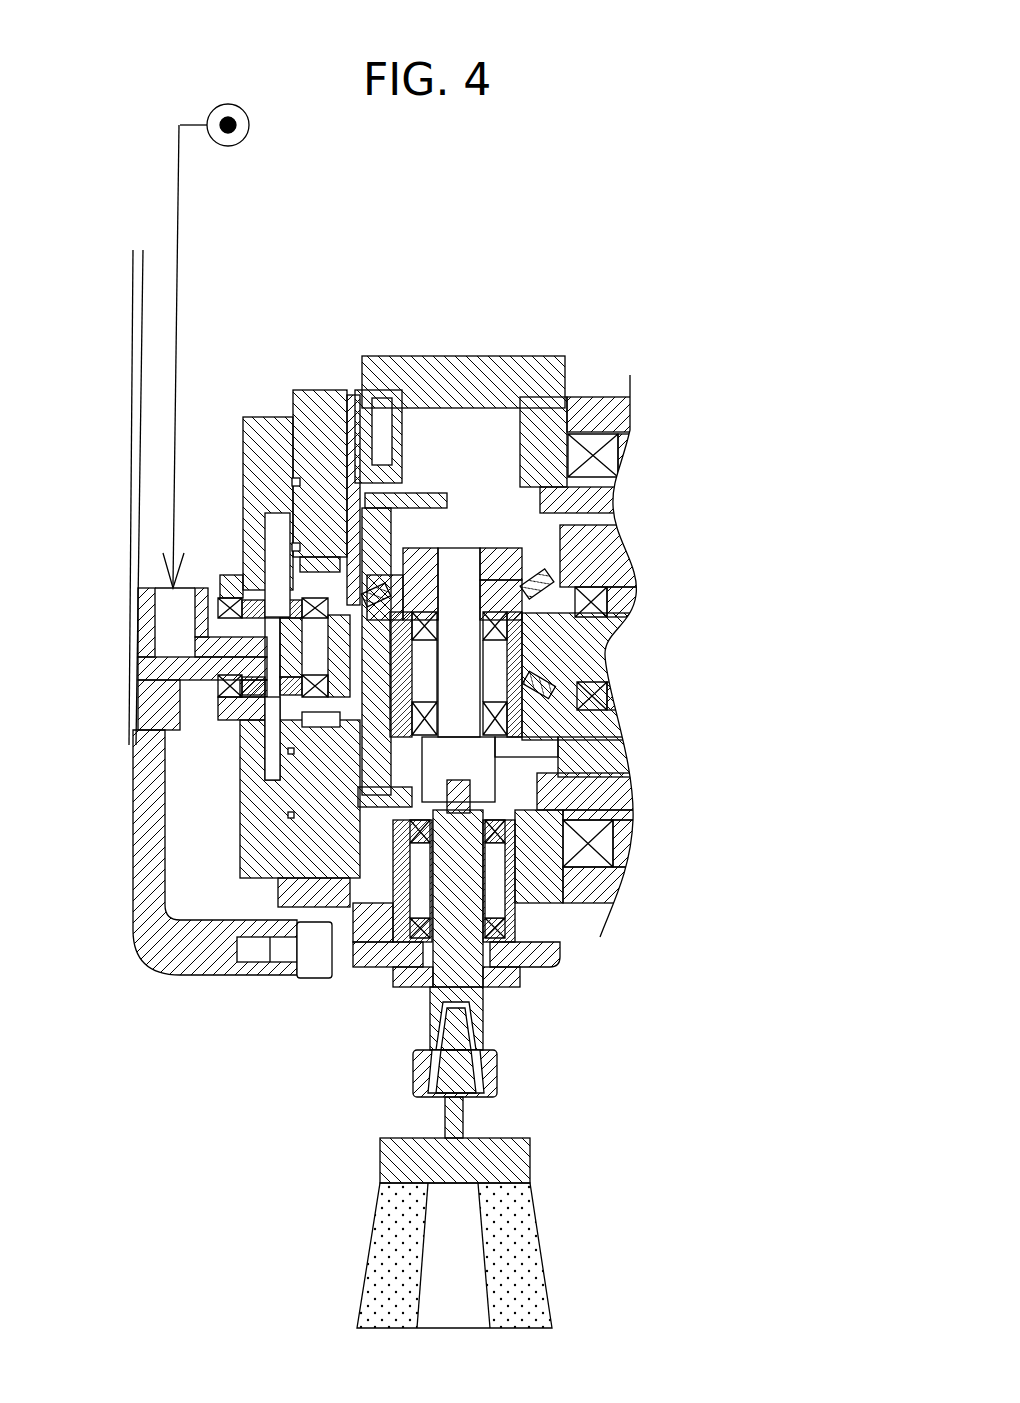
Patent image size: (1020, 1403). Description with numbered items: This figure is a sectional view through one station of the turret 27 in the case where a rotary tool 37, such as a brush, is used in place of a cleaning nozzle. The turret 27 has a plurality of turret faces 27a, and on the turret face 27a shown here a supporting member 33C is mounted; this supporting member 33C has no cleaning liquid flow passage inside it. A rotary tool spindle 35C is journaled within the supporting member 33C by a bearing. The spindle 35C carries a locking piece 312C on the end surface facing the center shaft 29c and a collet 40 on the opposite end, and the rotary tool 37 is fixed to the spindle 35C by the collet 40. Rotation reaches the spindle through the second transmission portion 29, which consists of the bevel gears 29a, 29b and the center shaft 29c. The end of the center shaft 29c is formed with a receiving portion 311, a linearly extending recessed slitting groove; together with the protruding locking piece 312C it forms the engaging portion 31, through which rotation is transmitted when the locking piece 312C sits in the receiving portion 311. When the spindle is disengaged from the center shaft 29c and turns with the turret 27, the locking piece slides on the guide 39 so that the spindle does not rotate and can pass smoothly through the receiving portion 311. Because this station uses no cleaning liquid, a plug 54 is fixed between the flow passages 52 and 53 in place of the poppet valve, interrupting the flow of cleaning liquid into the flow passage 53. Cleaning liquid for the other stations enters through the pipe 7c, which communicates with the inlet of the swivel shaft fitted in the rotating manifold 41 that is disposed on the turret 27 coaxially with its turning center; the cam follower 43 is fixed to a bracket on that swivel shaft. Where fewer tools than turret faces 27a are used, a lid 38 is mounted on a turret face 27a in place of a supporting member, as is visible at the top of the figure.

The pipe 7c is at (179, 200).
The rotating manifold 41 is at (218, 418).
The guide 39 is at (422, 487).
The lid 38 is at (510, 355).
The turret 27 is at (600, 493).
The second transmission portion 29 is at (641, 651).
The bevel gear 29a is at (573, 637).
The bevel gear 29b is at (635, 540).
The center shaft 29c is at (470, 688).
The engaging portion 31 is at (624, 771).
The receiving portion 311 is at (462, 780).
The locking piece 312C is at (540, 800).
The flow passage 52 is at (267, 748).
The plug 54 is at (277, 892).
The cam follower 43 is at (315, 960).
The flow passage 53 is at (377, 880).
The supporting member 33C is at (555, 905).
The turret face 27a is at (548, 958).
The rotary tool spindle 35C is at (420, 1050).
The collet 40 is at (497, 1075).
The rotary tool 37 is at (370, 1240).